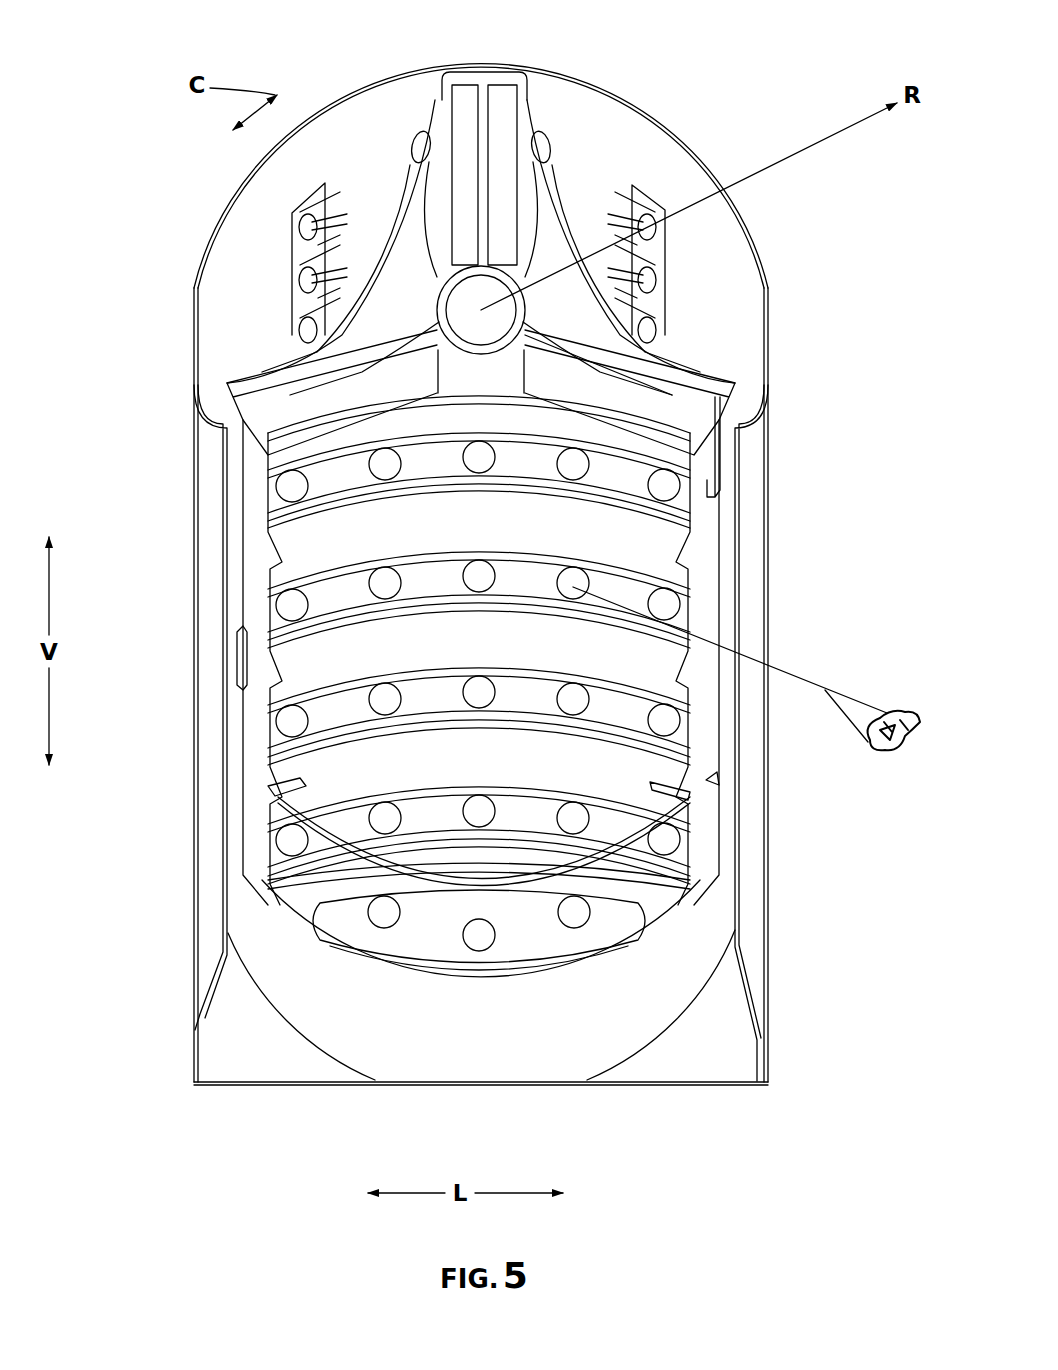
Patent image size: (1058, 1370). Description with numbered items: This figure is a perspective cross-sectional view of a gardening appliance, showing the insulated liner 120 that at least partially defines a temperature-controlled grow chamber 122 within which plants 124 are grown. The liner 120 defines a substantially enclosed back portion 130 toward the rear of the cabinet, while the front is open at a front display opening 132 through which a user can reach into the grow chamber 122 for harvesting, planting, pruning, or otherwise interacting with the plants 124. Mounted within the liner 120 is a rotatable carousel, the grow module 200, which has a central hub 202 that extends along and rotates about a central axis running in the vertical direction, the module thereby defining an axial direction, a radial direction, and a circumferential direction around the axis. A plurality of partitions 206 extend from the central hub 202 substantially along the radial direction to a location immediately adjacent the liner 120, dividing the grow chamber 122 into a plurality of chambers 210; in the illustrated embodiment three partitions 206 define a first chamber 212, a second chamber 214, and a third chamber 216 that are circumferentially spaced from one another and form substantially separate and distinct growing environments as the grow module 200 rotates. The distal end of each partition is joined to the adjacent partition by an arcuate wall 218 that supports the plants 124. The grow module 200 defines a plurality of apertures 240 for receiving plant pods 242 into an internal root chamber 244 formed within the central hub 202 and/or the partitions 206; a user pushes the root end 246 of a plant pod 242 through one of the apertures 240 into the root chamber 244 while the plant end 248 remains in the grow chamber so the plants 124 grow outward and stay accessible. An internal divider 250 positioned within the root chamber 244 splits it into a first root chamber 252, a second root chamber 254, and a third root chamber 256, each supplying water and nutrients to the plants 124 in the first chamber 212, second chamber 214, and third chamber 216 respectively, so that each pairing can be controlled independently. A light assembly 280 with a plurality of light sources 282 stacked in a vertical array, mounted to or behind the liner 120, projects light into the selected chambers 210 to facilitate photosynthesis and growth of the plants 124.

The insulated liner 120 is at (775, 312).
The grow chamber 122 is at (663, 151).
The plants 124 is at (893, 747).
The enclosed back portion 130 is at (630, 100).
The front display opening 132 is at (225, 1009).
The grow module 200 is at (371, 383).
The central hub 202 is at (438, 298).
The partitions 206 is at (472, 126).
The chambers 210 is at (735, 246).
The first chamber 212 is at (699, 152).
The second chamber 214 is at (337, 126).
The third chamber 216 is at (531, 948).
The arcuate wall 218 is at (313, 670).
The apertures 240 is at (371, 929).
The plant pods 242 is at (875, 710).
The root chamber 244 is at (680, 431).
The root end 246 is at (826, 688).
The plant end 248 is at (928, 722).
The internal divider 250 is at (350, 378).
The first root chamber 252 is at (617, 342).
The second root chamber 254 is at (428, 257).
The third root chamber 256 is at (603, 396).
The light assembly 280 is at (281, 309).
The light sources 282 is at (437, 315).